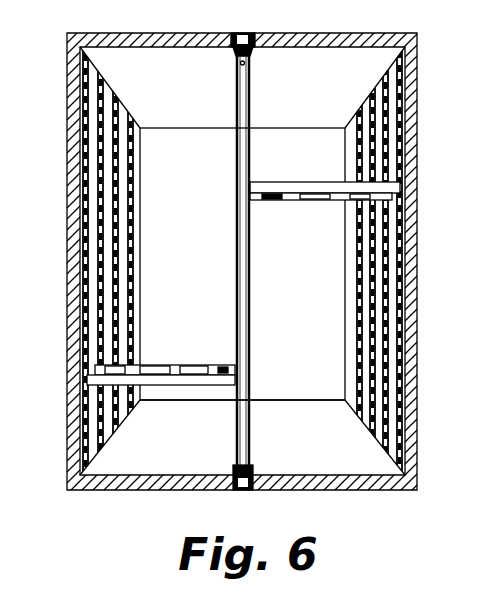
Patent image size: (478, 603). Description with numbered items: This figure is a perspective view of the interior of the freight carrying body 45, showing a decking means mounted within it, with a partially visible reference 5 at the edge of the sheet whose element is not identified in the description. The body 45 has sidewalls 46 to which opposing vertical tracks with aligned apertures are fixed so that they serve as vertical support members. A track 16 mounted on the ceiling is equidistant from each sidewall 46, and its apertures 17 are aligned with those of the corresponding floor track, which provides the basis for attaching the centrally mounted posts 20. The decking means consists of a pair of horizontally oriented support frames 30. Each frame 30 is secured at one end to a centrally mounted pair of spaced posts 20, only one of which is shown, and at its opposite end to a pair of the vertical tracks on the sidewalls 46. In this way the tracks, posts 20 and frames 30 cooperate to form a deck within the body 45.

The cabinet 5 is at (271, 261).
The track 16 is at (233, 54).
The apertures 17 is at (253, 52).
The posts 20 is at (249, 283).
The support frames 30 is at (294, 180).
The freight carrying body 45 is at (63, 272).
The sidewalls 46 is at (80, 468).